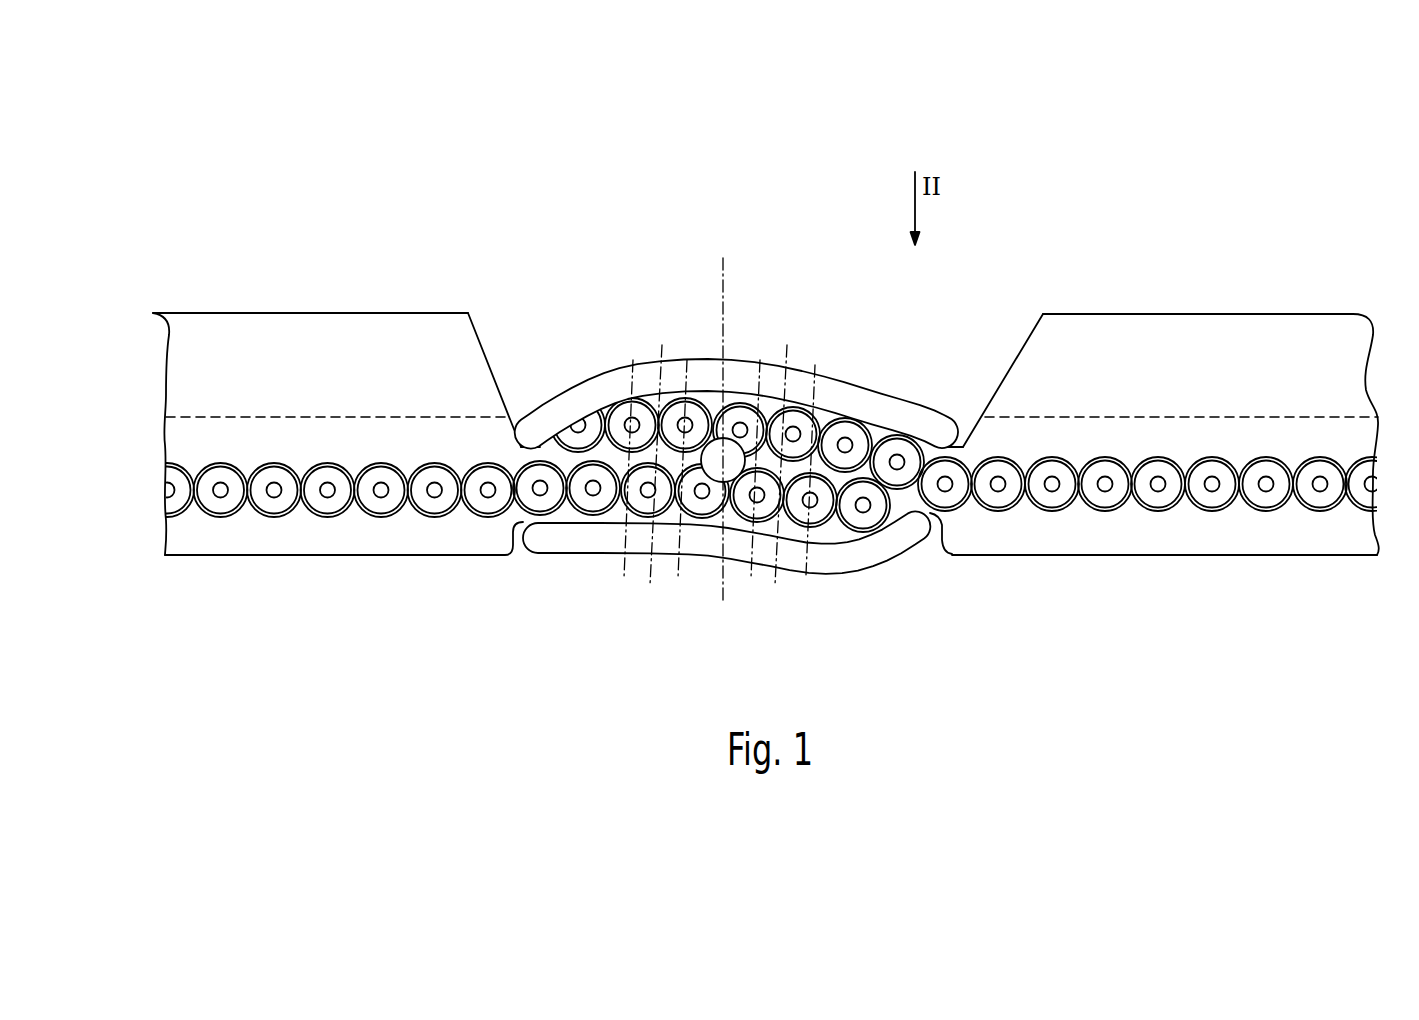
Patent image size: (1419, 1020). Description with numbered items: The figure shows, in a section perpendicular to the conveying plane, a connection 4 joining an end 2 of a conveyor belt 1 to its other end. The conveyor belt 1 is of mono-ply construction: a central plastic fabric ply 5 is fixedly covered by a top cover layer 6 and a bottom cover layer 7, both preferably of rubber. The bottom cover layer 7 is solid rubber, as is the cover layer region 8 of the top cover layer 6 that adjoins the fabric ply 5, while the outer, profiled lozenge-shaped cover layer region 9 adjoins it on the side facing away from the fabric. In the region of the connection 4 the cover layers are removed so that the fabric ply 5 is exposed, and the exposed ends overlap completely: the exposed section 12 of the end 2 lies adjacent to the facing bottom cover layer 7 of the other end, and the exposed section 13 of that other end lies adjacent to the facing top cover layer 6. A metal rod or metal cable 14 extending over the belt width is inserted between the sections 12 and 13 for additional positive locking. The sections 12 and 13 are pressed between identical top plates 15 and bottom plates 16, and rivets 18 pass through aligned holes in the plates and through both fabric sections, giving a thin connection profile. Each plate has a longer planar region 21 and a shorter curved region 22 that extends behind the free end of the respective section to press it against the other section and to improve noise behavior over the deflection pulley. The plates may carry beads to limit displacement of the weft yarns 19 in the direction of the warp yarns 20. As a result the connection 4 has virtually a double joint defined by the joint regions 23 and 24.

The conveyor belt 1 is at (263, 200).
The end of the conveyor belt 2 is at (427, 298).
The connection 4 is at (862, 335).
The fabric ply 5 is at (605, 400).
The top cover layer 6 is at (148, 400).
The bottom cover layer 7 is at (243, 543).
The cover layer region 8 is at (178, 438).
The cover layer region 9 is at (180, 365).
The exposed section 12 is at (733, 527).
The exposed section 13 is at (770, 400).
The metal rod or metal cable 14 is at (714, 465).
The top plate 15 is at (693, 378).
The bottom plate 16 is at (590, 535).
The rivet 18 is at (637, 540).
The weft yarns 19 is at (1052, 492).
The warp yarns 20 is at (1052, 447).
The planar region 21 is at (738, 378).
The curved region 22 is at (563, 390).
The joint region 23 is at (517, 392).
The joint region 24 is at (960, 400).